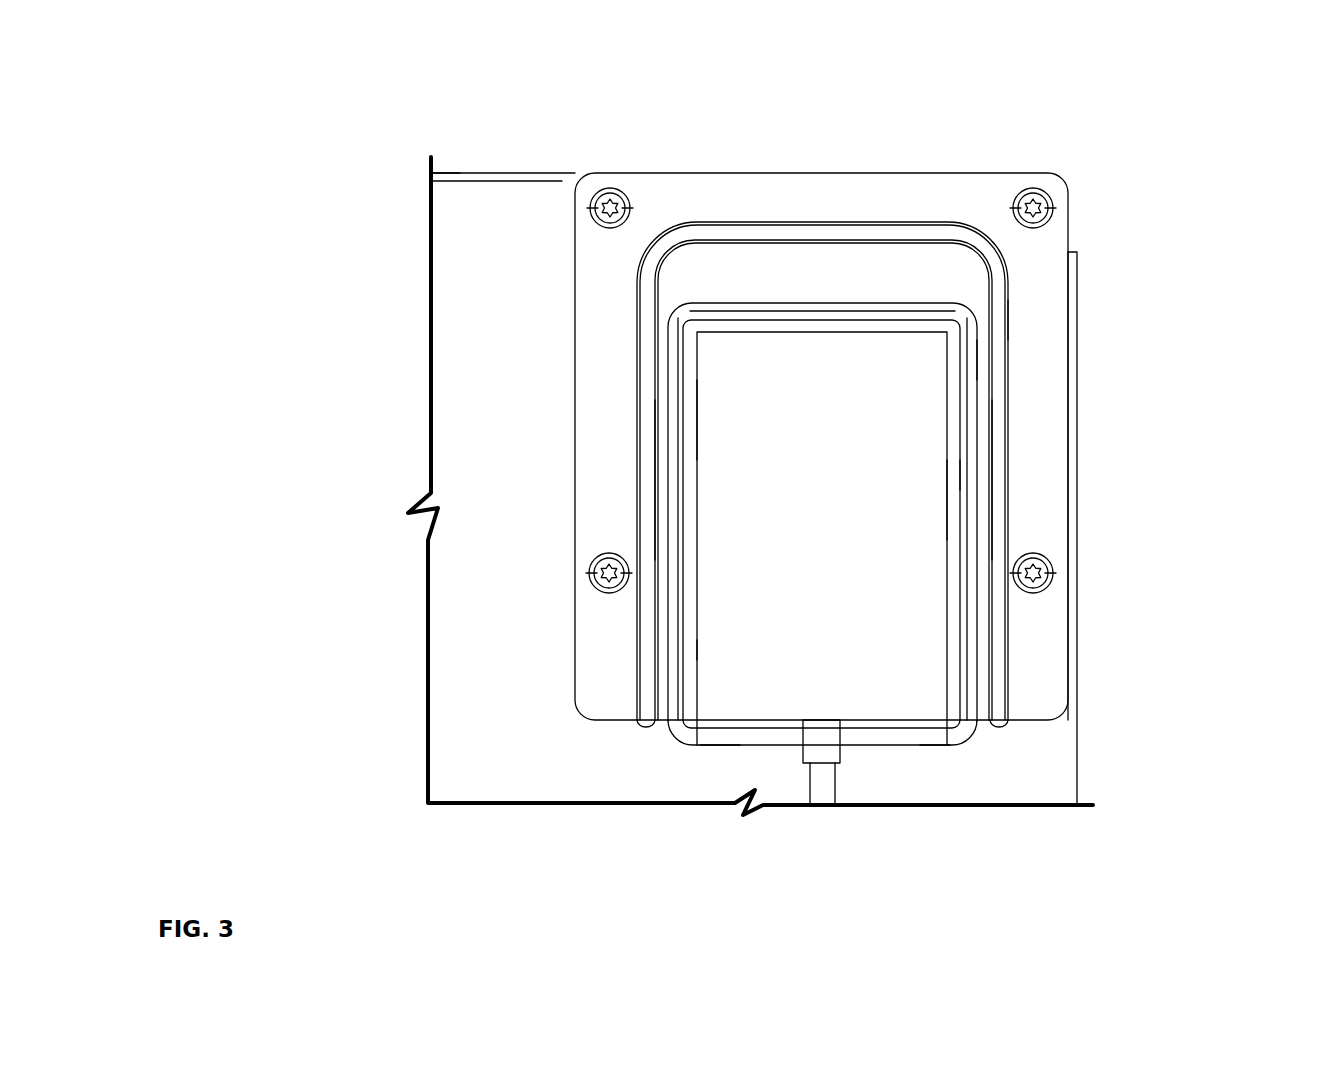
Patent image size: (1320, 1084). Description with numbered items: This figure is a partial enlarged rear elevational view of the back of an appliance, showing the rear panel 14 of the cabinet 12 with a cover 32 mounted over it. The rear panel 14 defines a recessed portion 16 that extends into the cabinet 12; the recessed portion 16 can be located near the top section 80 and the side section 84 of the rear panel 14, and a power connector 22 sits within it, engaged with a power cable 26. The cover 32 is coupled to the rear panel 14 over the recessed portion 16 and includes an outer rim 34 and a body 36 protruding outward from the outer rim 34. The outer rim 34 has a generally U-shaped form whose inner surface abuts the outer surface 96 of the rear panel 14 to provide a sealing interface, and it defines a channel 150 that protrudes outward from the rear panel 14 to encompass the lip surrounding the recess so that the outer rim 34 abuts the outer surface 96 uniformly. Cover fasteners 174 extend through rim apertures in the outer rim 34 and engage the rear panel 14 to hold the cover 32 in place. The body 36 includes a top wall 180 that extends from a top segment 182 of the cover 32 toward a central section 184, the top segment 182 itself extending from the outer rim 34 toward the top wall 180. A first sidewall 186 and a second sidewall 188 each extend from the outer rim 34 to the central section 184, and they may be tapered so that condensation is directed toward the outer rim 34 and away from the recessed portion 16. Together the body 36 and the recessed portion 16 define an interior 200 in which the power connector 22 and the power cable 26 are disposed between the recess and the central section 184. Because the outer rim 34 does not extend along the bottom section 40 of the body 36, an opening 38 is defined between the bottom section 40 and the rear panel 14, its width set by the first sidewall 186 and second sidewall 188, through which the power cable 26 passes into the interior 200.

The cabinet 12 is at (467, 188).
The rear panel 14 is at (460, 245).
The recessed portion 16 is at (1028, 362).
The power connector 22 is at (900, 477).
The power cable 26 is at (822, 773).
The cover 32 is at (920, 500).
The outer rim 34 is at (1055, 648).
The body 36 is at (715, 420).
The opening 38 is at (728, 733).
The bottom section 40 is at (937, 708).
The top section 80 is at (512, 172).
The side section 84 is at (1077, 710).
The outer surface 96 is at (465, 406).
The channel 150 is at (1010, 315).
The cover fasteners 174 is at (622, 207).
The top wall 180 is at (905, 313).
The top segment 182 is at (787, 263).
The central section 184 is at (823, 360).
The first sidewall 186 is at (668, 490).
The second sidewall 188 is at (975, 530).
The interior 200 is at (733, 647).